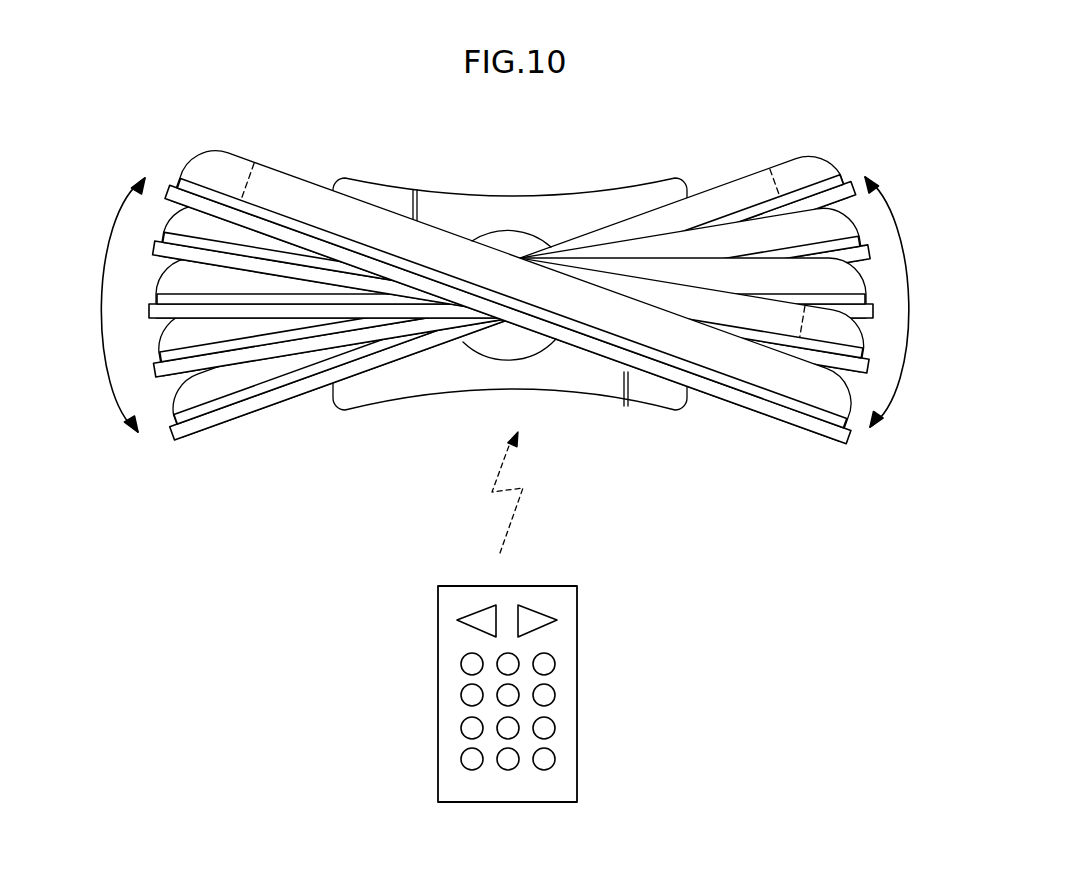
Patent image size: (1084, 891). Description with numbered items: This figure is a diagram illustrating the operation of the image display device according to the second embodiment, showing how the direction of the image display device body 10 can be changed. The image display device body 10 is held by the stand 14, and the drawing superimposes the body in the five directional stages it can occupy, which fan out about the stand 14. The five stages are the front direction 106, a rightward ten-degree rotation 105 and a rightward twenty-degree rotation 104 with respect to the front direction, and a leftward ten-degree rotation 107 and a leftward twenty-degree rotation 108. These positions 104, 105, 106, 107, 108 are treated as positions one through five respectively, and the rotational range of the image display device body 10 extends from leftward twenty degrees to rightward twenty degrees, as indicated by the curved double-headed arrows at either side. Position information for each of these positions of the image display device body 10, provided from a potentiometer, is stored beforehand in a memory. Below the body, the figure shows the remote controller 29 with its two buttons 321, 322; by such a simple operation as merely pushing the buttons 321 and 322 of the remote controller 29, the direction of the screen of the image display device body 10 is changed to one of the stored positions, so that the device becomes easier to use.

The image display device body 10 is at (508, 281).
The stand 14 is at (393, 388).
The rightward 20° rotation position 104 is at (757, 167).
The rightward 10° rotation position 105 is at (807, 218).
The front direction position 106 is at (840, 277).
The leftward 10° rotation position 107 is at (860, 380).
The leftward 20° rotation position 108 is at (798, 427).
The remote controller 29 is at (512, 694).
The button 321 is at (457, 620).
The button 322 is at (557, 620).